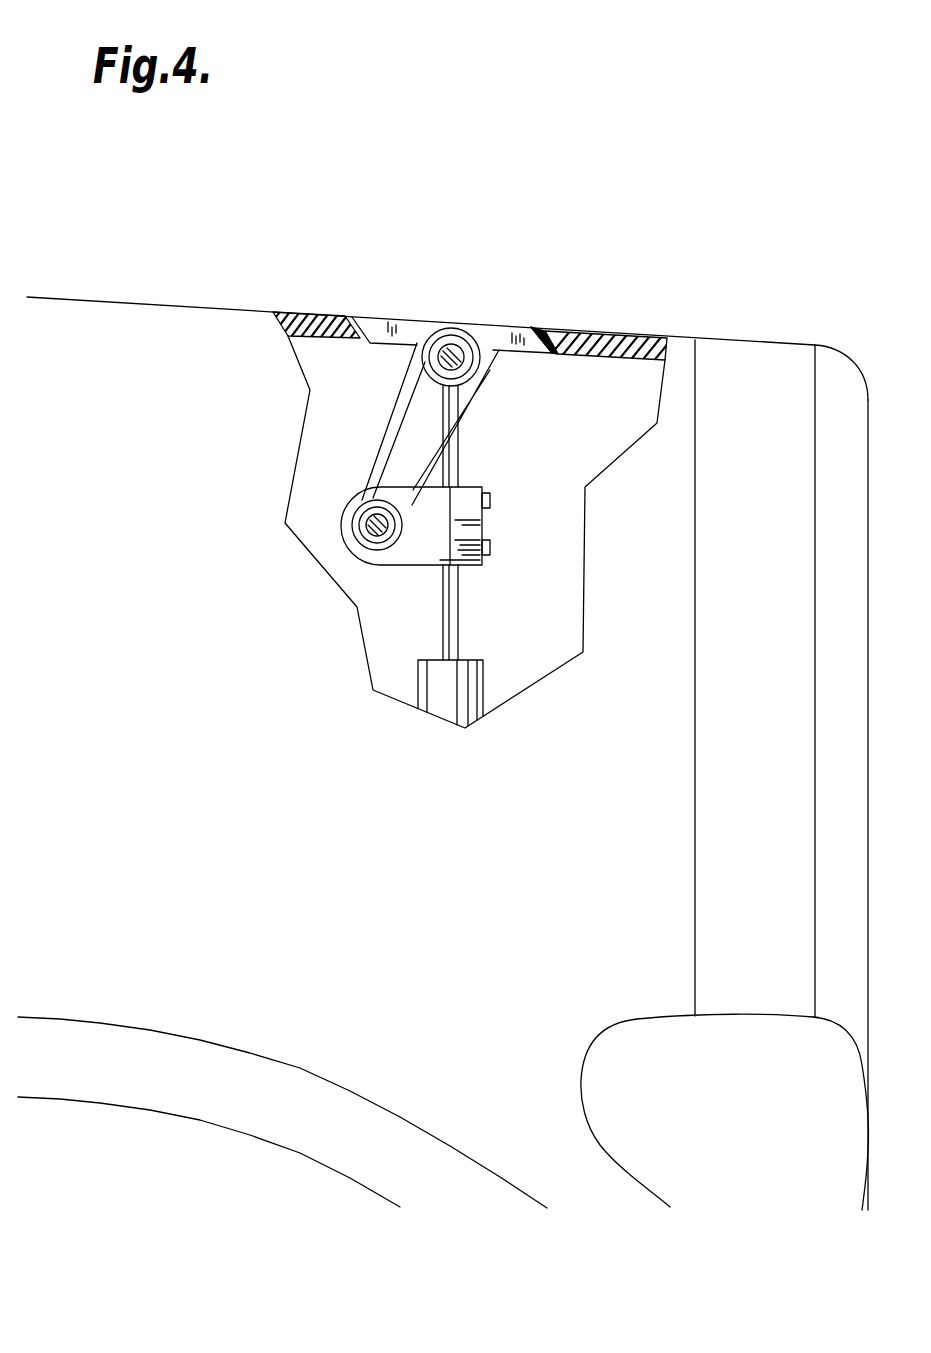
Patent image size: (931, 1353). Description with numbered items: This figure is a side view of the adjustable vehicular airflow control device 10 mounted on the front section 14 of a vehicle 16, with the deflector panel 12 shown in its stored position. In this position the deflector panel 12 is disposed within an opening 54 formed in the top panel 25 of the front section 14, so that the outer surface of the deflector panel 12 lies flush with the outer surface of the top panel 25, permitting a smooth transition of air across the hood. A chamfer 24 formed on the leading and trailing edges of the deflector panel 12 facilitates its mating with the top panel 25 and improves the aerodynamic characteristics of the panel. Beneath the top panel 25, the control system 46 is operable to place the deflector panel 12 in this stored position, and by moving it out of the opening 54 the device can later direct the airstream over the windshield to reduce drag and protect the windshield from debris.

The adjustable vehicular airflow control device 10 is at (492, 228).
The deflector panel 12 is at (477, 326).
The front section 14 is at (183, 307).
The vehicle 16 is at (847, 333).
The chamfer 24 is at (547, 329).
The top panel 25 is at (631, 332).
The control system 46 is at (520, 497).
The opening 54 is at (347, 317).